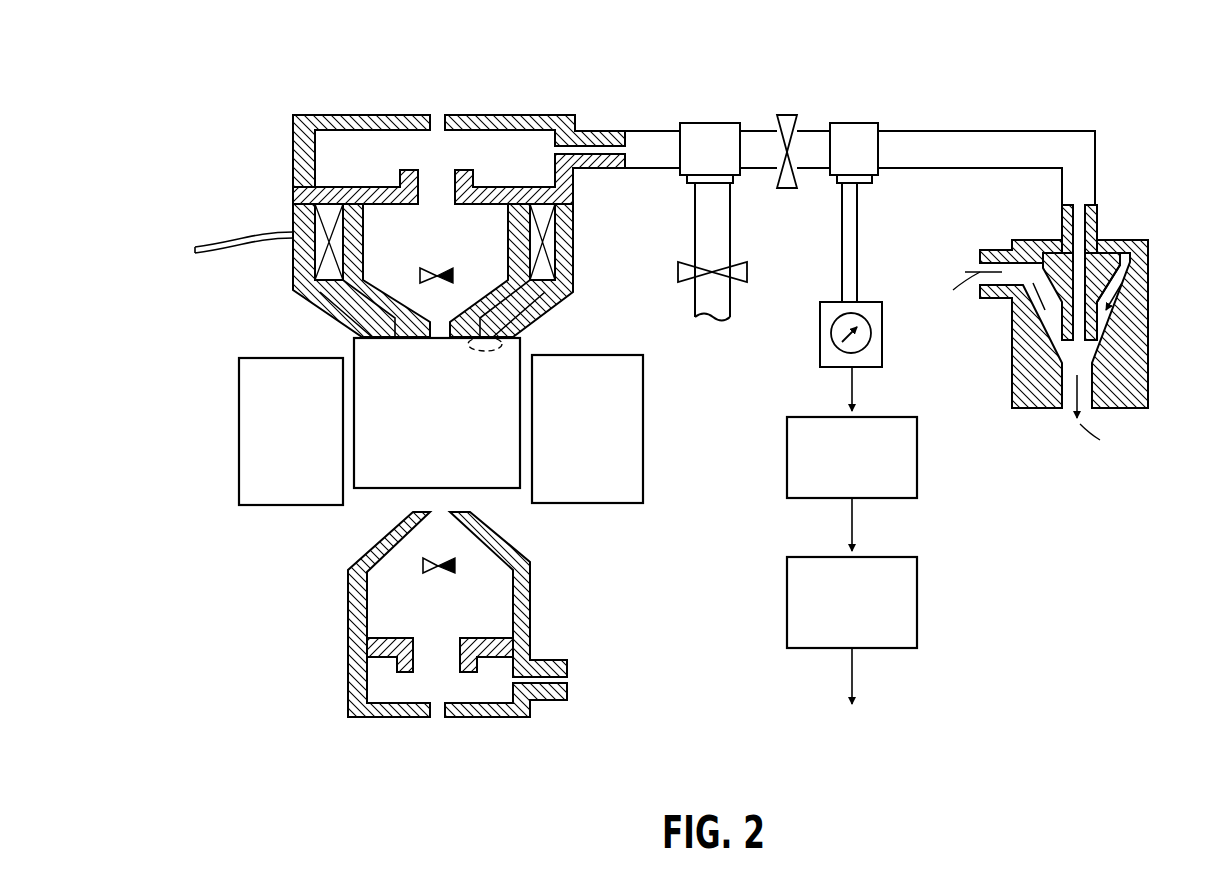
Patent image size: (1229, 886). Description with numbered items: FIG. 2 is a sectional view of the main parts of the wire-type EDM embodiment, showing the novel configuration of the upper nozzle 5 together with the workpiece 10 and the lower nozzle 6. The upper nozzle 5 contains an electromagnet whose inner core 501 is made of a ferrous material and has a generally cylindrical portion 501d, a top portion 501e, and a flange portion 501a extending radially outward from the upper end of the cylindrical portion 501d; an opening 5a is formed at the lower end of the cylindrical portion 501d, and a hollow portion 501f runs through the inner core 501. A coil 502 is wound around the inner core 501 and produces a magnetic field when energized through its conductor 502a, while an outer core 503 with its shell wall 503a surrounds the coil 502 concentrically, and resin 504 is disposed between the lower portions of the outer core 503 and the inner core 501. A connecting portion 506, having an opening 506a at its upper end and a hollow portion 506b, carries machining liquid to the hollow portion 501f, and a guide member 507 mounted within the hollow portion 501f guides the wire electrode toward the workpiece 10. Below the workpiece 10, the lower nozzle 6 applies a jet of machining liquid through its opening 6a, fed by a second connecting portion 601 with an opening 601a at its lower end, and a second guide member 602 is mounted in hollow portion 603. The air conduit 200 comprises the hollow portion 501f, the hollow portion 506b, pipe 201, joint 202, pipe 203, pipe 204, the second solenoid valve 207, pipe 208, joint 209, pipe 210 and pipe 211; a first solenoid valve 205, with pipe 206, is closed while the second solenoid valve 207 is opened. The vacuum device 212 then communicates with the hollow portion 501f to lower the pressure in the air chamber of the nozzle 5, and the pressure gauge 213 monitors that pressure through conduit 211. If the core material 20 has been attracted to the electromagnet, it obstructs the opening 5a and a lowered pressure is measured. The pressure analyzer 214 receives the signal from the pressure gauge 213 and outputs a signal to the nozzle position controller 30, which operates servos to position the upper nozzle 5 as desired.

The upper nozzle 5 is at (412, 223).
The opening 5a is at (445, 340).
The lower nozzle 6 is at (478, 634).
The opening 6a is at (443, 515).
The workpiece 10 is at (268, 506).
The core material 20 is at (452, 450).
The nozzle position controller 30 is at (920, 580).
The air conduit 200 is at (777, 58).
The pipe 201 is at (606, 131).
The joint 202 is at (710, 125).
The pipe 203 is at (718, 237).
The pipe 204 is at (757, 140).
The first solenoid valve 205 is at (750, 275).
The pipe 206 is at (725, 315).
The second solenoid valve 207 is at (780, 190).
The pipe 208 is at (812, 136).
The joint 209 is at (858, 128).
The pipe 210 is at (952, 138).
The pipe 211 is at (858, 236).
The vacuum device 212 is at (1152, 313).
The pressure gauge 213 is at (884, 353).
The pressure analyzer 214 is at (920, 490).
The inner core 501 is at (488, 190).
The flange portion 501a is at (578, 196).
The cylindrical portion 501d is at (300, 268).
The top portion 501e is at (387, 185).
The hollow portion 501f is at (423, 244).
The coil 502 is at (560, 250).
The conductor 502a is at (232, 243).
The outer core 503 is at (552, 300).
The shell wall 503a is at (572, 226).
The resin 504 is at (520, 330).
The connecting portion 506 is at (557, 96).
The opening 506a is at (436, 120).
The hollow portion 506b is at (345, 135).
The guide member 507 is at (458, 280).
The second connecting portion 601 is at (503, 718).
The opening 601a is at (437, 720).
The guide member 602 is at (440, 575).
The hollow portion 603 is at (508, 566).